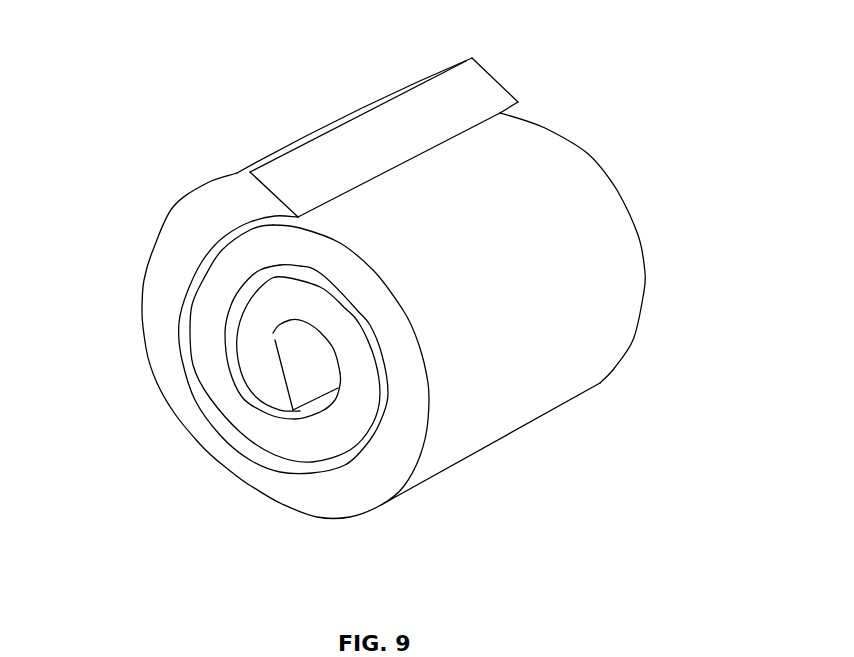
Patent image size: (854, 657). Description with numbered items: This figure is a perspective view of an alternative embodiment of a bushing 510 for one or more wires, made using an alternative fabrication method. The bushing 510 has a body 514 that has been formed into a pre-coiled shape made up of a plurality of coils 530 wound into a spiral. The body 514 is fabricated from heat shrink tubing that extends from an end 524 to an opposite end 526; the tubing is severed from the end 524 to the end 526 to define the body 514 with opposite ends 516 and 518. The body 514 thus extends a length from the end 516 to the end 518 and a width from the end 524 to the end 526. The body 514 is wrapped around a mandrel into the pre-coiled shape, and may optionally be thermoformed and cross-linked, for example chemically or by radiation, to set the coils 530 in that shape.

The bushing 510 is at (586, 70).
The body 514 is at (341, 524).
The end 516 is at (468, 87).
The end 518 is at (309, 399).
The end 524 is at (142, 298).
The end 526 is at (590, 152).
The coils 530 is at (163, 344).